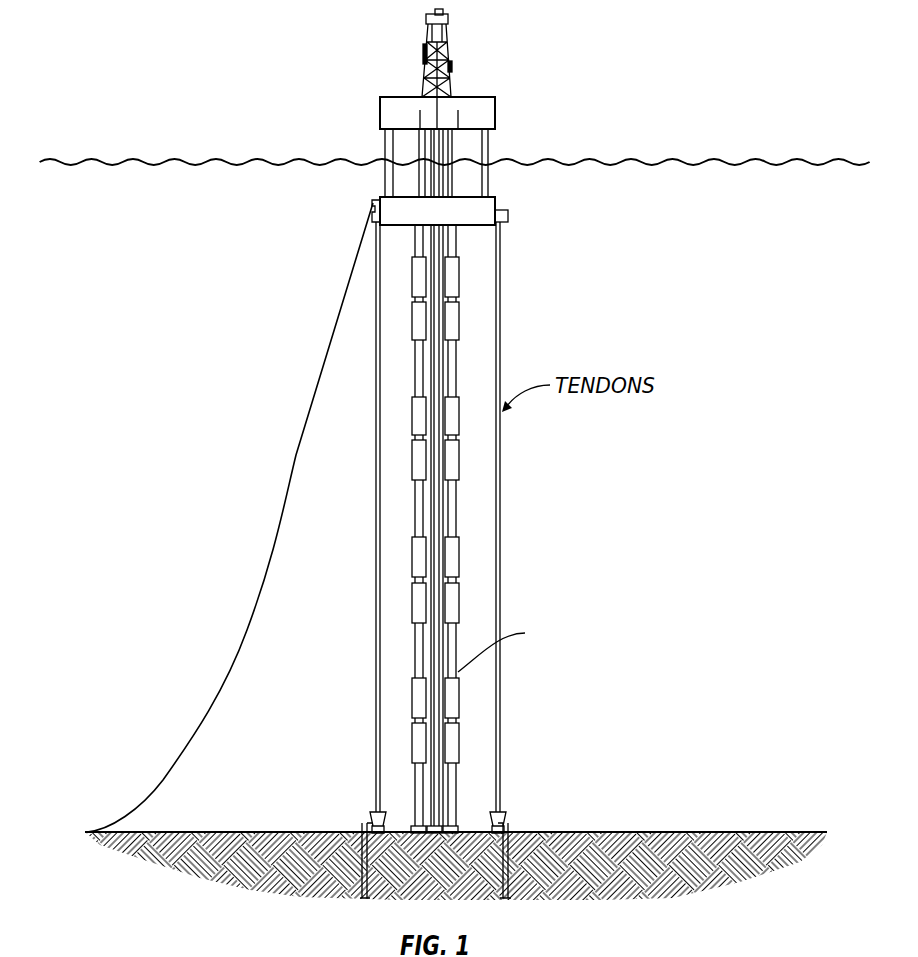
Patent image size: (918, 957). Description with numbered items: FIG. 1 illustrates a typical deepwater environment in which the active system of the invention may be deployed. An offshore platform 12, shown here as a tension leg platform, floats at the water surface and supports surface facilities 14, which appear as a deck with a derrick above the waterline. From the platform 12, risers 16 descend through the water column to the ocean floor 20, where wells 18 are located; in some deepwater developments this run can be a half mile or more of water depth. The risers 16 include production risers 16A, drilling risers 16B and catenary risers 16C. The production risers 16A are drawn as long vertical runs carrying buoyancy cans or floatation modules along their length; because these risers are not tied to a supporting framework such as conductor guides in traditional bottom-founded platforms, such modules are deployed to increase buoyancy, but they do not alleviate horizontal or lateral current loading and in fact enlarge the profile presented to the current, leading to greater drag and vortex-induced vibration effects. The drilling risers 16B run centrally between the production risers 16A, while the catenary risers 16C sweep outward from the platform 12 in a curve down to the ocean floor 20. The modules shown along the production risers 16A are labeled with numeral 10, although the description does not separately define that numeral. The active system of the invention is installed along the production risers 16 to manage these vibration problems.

The buoyancy modules 10 is at (459, 313).
The tension leg platform 12 is at (476, 117).
The surface facilities 14 is at (380, 108).
The risers 16 is at (393, 517).
The production risers 16A is at (485, 525).
The drilling risers 16B is at (439, 515).
The catenary risers 16C is at (295, 463).
The wells 18 is at (458, 808).
The ocean floor 20 is at (640, 832).